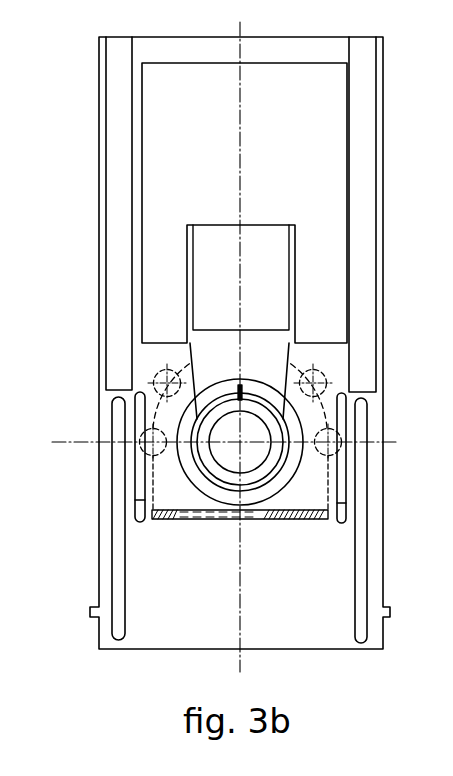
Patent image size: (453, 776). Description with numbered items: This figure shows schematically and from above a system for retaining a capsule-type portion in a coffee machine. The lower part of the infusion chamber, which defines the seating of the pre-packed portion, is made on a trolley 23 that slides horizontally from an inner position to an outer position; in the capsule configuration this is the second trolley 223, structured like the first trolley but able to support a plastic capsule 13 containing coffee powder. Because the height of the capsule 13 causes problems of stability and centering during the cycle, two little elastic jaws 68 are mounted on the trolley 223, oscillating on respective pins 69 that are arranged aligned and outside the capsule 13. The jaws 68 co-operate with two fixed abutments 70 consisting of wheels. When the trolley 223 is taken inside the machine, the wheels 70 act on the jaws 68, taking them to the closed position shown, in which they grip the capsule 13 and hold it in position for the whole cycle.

The plastic capsule 13 is at (225, 477).
The trolley 23 is at (90, 554).
The elastic jaws 68 is at (216, 385).
The pins 69 is at (145, 447).
The fixed abutments 70 is at (182, 392).
The second trolley 223 is at (346, 549).